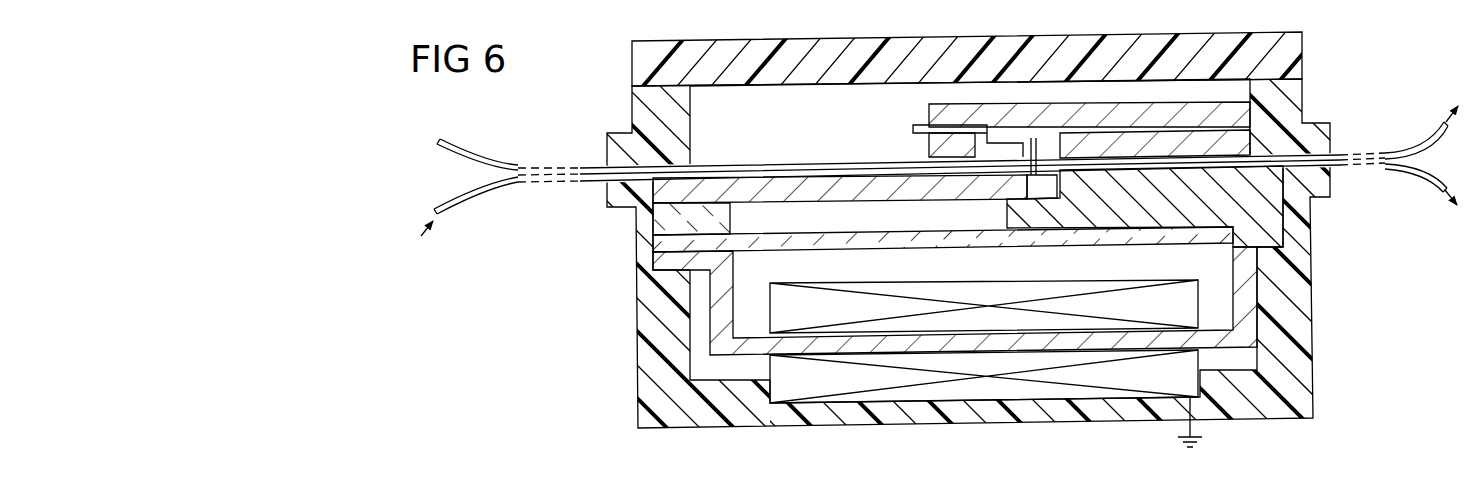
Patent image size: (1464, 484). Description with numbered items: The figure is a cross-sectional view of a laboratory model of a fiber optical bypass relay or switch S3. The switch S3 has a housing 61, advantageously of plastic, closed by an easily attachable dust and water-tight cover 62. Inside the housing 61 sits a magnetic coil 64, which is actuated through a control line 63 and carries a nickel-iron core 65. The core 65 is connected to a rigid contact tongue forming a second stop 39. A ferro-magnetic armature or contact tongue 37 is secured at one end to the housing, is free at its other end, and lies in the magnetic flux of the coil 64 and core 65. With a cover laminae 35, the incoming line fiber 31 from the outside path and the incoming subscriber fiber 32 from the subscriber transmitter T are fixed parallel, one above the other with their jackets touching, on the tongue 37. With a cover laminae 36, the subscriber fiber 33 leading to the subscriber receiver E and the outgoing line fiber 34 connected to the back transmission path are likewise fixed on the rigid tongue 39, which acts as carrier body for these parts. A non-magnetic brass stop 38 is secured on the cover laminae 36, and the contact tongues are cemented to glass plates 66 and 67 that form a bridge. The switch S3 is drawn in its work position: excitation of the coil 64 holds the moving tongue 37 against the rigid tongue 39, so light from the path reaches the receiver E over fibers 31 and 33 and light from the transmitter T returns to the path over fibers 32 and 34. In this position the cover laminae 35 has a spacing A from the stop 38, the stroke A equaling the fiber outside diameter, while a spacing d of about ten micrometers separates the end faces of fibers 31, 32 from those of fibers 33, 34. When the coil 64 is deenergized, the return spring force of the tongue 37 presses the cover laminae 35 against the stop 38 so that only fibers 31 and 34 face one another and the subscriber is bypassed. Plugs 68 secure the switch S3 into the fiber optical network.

The incoming line fiber 31 is at (498, 185).
The incoming subscriber fiber 32 is at (513, 170).
The subscriber fiber 33 is at (1407, 171).
The outgoing line fiber 34 is at (1408, 147).
The cover laminae 35 is at (913, 148).
The cover laminae 36 is at (1235, 144).
The contact tongue 37 is at (903, 198).
The stop 38 is at (1235, 113).
The rigid contact tongue 39 is at (1018, 240).
The housing 61 is at (1303, 331).
The cover 62 is at (975, 43).
The control line 63 is at (785, 404).
The magnetic coil 64 is at (1152, 292).
The nickel-iron core 65 is at (1214, 340).
The glass plate 66 is at (863, 242).
The glass plate 67 is at (732, 219).
The plugs 68 is at (623, 197).
The subscriber transmitter T is at (438, 130).
The subscriber receiver E is at (1439, 216).
The stroke A is at (913, 155).
The spacing d is at (1053, 146).
The fiber optical bypass switch S3 is at (594, 326).